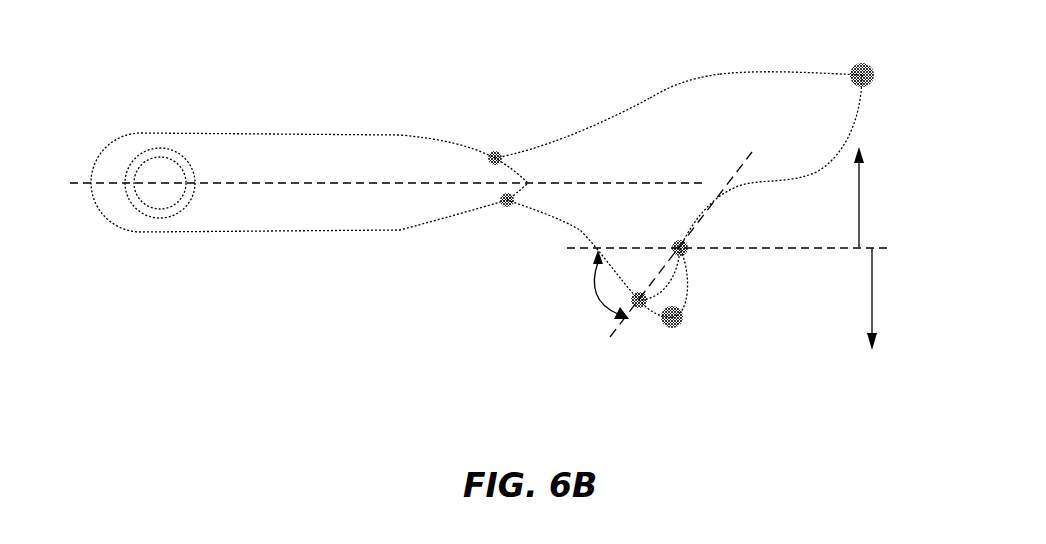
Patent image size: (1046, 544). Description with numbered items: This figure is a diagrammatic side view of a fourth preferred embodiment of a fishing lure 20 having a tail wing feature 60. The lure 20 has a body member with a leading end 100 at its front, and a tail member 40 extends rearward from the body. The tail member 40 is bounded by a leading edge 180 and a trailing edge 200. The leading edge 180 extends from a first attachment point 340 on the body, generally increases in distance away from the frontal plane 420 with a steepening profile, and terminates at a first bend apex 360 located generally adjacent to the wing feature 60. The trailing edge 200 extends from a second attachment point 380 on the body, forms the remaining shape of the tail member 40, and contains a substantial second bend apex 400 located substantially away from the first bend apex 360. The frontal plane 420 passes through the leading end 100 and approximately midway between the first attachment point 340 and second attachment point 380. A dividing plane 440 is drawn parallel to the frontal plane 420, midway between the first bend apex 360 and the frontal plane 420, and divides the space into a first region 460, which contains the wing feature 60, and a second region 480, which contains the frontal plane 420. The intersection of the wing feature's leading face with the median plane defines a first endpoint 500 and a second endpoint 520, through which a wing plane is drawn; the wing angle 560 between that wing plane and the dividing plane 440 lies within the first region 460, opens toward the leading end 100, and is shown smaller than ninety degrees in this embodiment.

The fishing lure 20 is at (378, 68).
The tail member 40 is at (663, 110).
The wing feature 60 is at (697, 318).
The leading end 100 is at (102, 168).
The leading edge 180 is at (547, 216).
The trailing edge 200 is at (735, 72).
The first attachment point 340 is at (507, 207).
The first bend apex 360 is at (682, 328).
The second attachment point 380 is at (495, 151).
The second bend apex 400 is at (858, 65).
The frontal plane 420 is at (548, 183).
The dividing plane 440 is at (570, 251).
The first region 460 is at (870, 288).
The second region 480 is at (857, 216).
The first endpoint 500 is at (692, 262).
The second endpoint 520 is at (641, 308).
The wing angle 560 is at (597, 302).